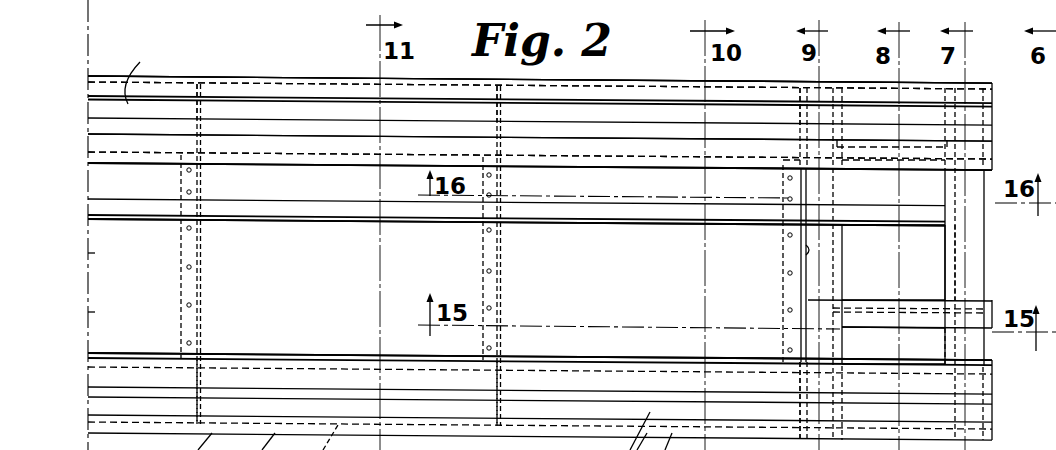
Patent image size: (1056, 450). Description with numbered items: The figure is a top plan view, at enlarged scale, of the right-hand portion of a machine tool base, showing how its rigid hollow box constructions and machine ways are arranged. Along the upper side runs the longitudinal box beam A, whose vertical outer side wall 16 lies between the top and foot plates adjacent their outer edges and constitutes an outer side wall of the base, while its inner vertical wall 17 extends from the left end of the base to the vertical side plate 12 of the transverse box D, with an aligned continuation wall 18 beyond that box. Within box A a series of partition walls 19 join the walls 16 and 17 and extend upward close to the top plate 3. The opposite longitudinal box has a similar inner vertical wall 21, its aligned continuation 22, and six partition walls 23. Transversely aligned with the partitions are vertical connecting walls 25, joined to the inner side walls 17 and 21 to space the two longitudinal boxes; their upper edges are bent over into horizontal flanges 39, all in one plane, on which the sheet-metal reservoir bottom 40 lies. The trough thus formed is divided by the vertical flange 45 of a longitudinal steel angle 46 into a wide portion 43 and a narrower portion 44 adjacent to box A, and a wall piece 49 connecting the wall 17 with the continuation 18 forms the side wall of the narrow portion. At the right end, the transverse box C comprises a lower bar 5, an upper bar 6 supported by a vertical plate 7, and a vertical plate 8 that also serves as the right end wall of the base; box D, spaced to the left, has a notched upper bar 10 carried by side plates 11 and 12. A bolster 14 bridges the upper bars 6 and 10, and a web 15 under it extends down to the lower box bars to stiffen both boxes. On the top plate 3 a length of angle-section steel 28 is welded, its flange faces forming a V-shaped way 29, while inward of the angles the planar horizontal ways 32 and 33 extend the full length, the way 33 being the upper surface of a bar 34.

The top plate 3 is at (188, 77).
The lower steel bar 5 is at (943, 334).
The upper bar 6 is at (945, 236).
The vertical plate 7 is at (950, 272).
The vertical plate 8 is at (985, 247).
The upper bar 10 is at (893, 237).
The box side plate 11 is at (843, 285).
The box side plate 12 is at (806, 250).
The bolster 14 is at (968, 306).
The web 15 is at (893, 287).
The vertical outer side wall 16 is at (316, 82).
The inner vertical wall 17 is at (756, 161).
The continuation wall 18 is at (892, 163).
The partition wall 19 is at (201, 100).
The inner vertical wall 21 is at (637, 370).
The continuation wall 22 is at (893, 341).
The partition wall 23 is at (200, 370).
The vertical connecting wall 25 is at (201, 285).
The angle-section steel 28 is at (605, 82).
The V-shaped way 29 is at (146, 92).
The planar horizontal way 32 is at (88, 141).
The planar horizontal way 33 is at (96, 378).
The bar 34 is at (96, 386).
The horizontal flange 39 is at (181, 275).
The reservoir bottom 40 is at (96, 312).
The wide reservoir portion 43 is at (96, 253).
The narrower reservoir portion 44 is at (96, 179).
The vertical flange 45 is at (133, 221).
The longitudinal steel angle 46 is at (96, 208).
The wall piece 49 is at (820, 163).
The longitudinal box beam construction A is at (265, 77).
The transverse box structure C is at (945, 255).
The transverse box structure D is at (843, 258).